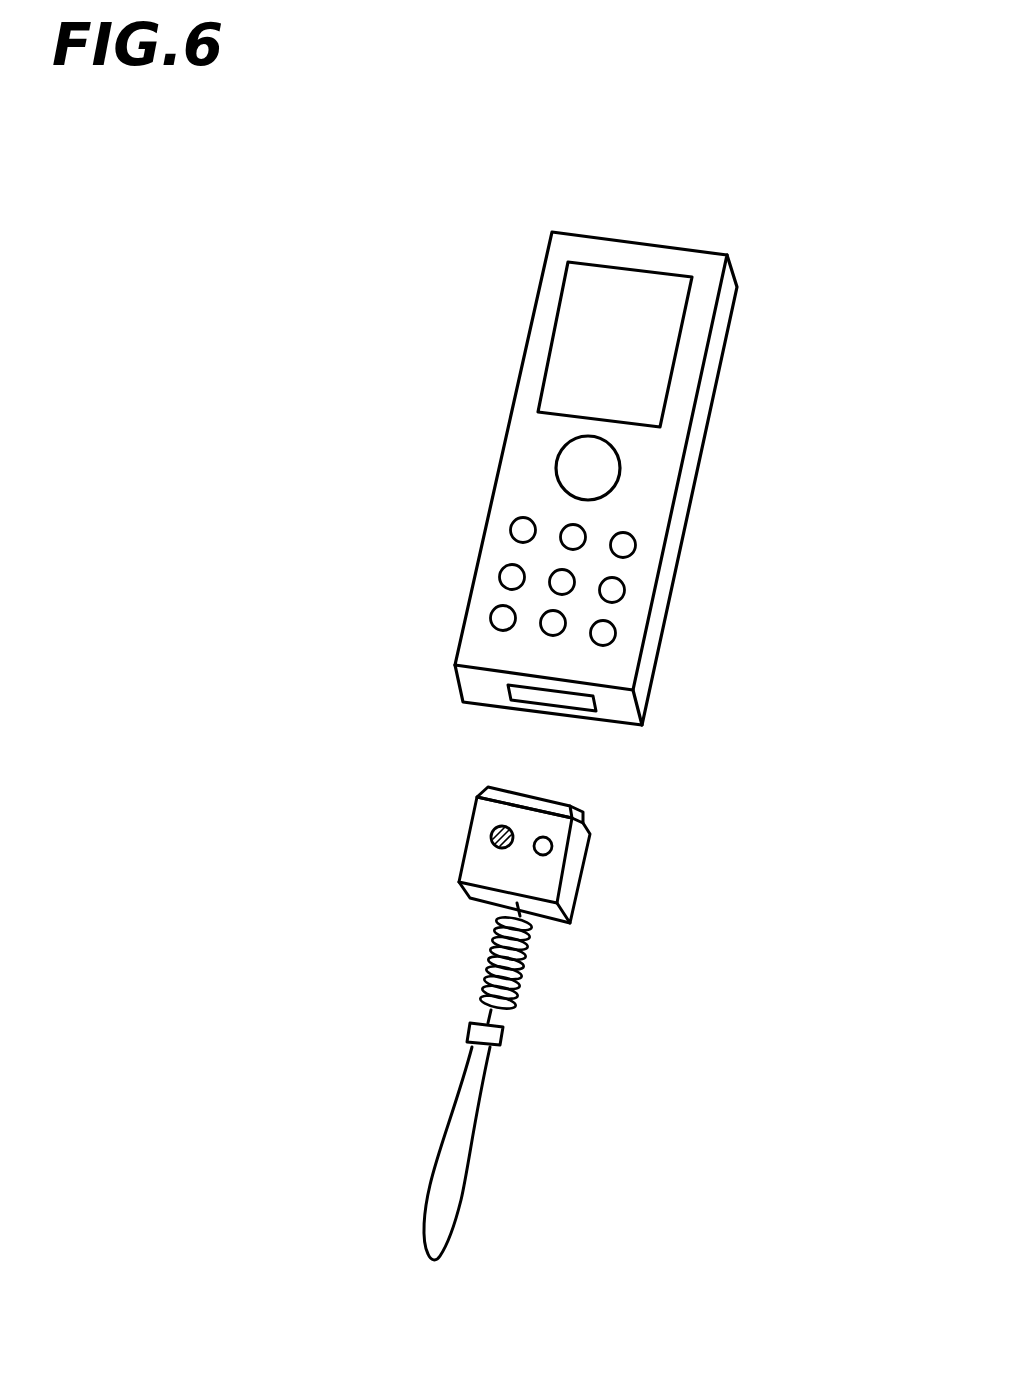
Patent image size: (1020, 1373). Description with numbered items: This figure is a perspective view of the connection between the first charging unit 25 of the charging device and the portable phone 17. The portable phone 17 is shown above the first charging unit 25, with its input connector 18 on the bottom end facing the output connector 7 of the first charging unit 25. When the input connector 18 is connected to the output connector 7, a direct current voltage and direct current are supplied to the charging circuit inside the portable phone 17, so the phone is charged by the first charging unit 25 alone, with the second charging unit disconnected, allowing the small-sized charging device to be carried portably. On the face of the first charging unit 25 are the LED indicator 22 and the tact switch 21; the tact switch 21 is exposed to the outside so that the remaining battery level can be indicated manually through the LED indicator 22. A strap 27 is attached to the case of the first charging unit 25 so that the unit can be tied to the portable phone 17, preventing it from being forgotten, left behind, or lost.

The portable phone 17 is at (692, 490).
The input connector 18 is at (557, 700).
The output connector 7 is at (517, 792).
The LED indicator 22 is at (491, 834).
The tact switch 21 is at (552, 846).
The first charging unit 25 is at (580, 895).
The strap 27 is at (503, 1035).